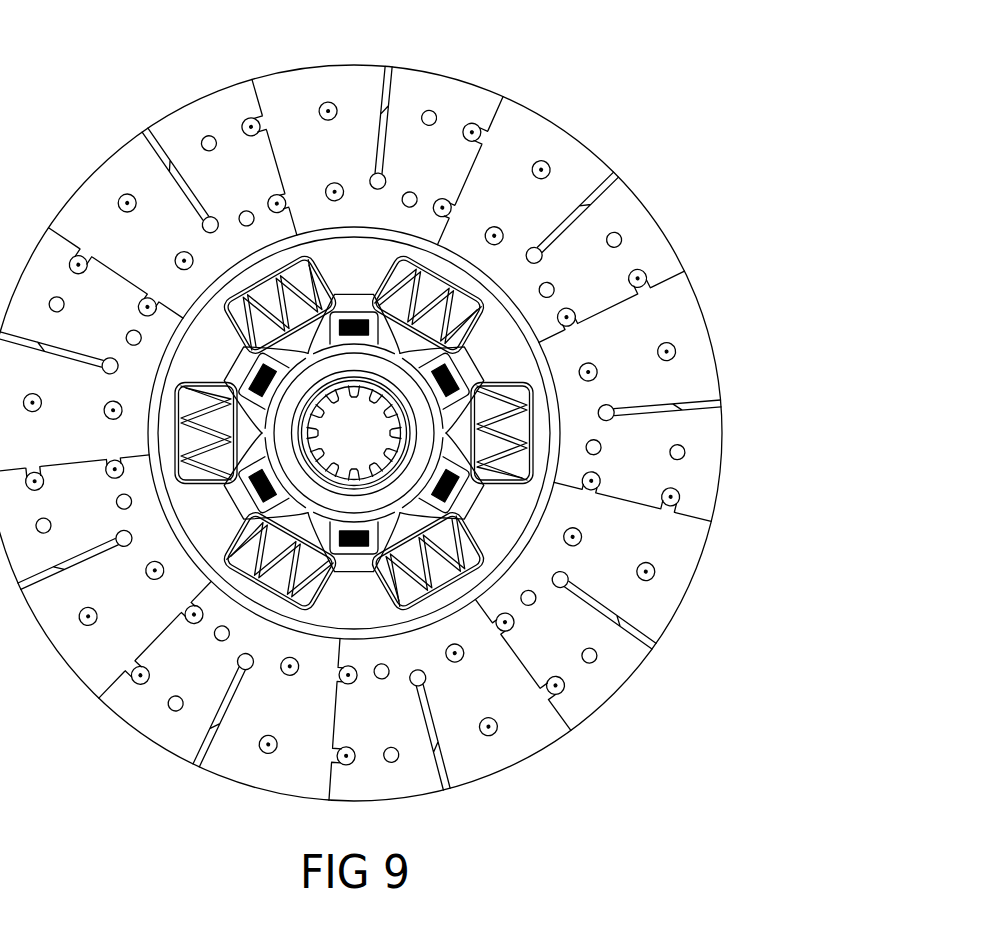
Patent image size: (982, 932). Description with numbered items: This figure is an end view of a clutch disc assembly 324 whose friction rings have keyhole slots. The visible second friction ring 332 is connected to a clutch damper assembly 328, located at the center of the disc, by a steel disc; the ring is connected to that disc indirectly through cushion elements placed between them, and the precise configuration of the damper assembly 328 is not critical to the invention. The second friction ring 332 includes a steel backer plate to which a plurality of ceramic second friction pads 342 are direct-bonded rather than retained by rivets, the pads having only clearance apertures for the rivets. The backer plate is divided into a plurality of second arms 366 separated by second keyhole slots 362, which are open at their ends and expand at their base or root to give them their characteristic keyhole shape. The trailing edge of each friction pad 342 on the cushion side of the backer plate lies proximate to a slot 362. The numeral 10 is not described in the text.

The clutch disc assembly 10 is at (725, 434).
The clutch disc assembly 324 is at (125, 77).
The clutch damper assembly 328 is at (520, 560).
The second friction ring 332 is at (573, 143).
The second friction pad 342 is at (472, 93).
The second keyhole slot 362 is at (200, 763).
The second arm 366 is at (543, 110).